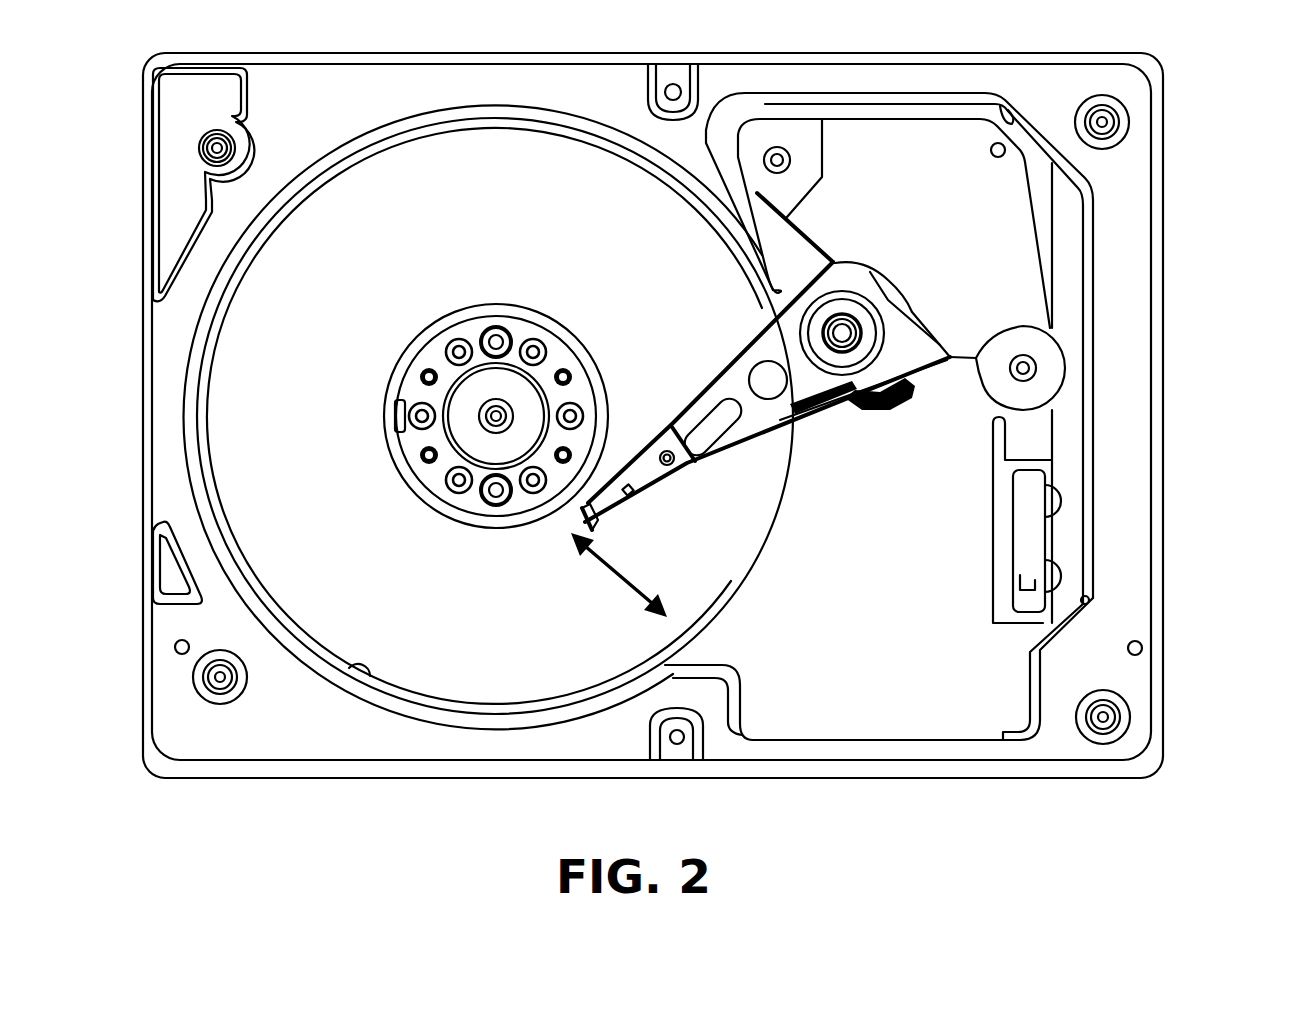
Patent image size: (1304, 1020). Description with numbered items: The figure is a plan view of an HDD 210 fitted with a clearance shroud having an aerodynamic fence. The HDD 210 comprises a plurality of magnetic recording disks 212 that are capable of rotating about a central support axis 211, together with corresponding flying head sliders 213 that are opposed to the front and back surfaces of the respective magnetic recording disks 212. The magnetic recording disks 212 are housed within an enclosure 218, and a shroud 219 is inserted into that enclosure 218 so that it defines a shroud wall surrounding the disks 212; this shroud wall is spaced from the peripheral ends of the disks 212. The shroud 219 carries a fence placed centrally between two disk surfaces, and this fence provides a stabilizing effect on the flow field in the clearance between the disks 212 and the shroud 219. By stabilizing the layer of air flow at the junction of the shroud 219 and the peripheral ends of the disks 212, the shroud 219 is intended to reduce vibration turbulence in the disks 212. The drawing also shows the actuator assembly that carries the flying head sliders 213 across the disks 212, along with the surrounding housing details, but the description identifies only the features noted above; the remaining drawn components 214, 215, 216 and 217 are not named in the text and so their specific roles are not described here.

The HDD 210 is at (1178, 118).
The support axis 211 is at (492, 412).
The magnetic recording disks 212 is at (727, 543).
The flying head sliders 213 is at (598, 527).
The actuator pivot 214 is at (822, 328).
The actuator arm 215 is at (713, 385).
The voice coil motor / crash stop 216 is at (948, 384).
The base housing 217 is at (1165, 522).
The enclosure 218 is at (372, 125).
The shroud 219 is at (345, 668).